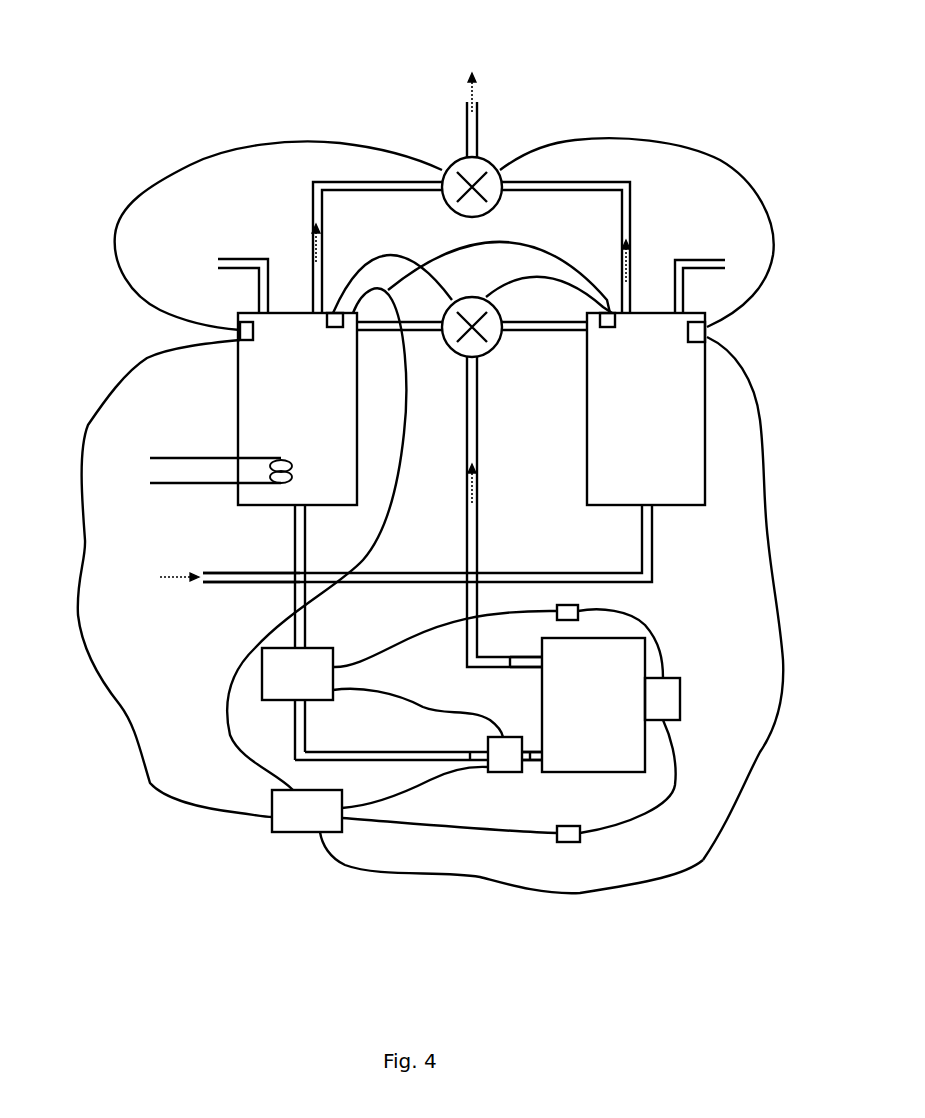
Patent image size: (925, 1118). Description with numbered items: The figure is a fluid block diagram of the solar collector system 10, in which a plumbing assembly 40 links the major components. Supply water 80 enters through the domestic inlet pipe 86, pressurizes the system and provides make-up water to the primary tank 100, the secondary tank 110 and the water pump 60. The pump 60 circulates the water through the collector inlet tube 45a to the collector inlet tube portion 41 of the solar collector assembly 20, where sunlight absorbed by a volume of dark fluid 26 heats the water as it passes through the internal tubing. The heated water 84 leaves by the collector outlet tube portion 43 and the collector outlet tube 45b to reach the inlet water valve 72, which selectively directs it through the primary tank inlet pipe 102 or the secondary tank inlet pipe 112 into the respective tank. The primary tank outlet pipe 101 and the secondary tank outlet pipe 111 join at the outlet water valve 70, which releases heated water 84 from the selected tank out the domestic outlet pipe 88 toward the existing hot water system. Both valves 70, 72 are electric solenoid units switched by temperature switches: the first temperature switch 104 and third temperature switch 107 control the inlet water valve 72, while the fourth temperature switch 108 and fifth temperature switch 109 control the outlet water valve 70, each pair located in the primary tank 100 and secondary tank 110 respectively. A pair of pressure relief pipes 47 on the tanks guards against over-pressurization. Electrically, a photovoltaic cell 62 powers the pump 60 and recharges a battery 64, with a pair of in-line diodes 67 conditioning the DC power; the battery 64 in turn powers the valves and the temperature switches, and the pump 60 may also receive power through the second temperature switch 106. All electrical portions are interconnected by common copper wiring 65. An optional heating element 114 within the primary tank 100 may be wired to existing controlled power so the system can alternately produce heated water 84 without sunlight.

The solar collector system 10 is at (140, 132).
The solar collector assembly 20 is at (668, 793).
The dark fluid 26 is at (647, 747).
The plumbing assembly 40 is at (590, 180).
The collector inlet tube portion 41 is at (533, 760).
The collector outlet tube portion 43 is at (527, 667).
The collector inlet tube 45a is at (420, 752).
The collector outlet tube 45b is at (470, 403).
The pressure relief pipes 47 is at (247, 260).
The water pump 60 is at (285, 685).
The photovoltaic cell 62 is at (670, 700).
The battery 64 is at (302, 815).
The copper wiring 65 is at (505, 283).
The in-line diodes 67 is at (578, 607).
The outlet water valve 70 is at (485, 157).
The inlet water valve 72 is at (493, 352).
The supply water 80 is at (163, 580).
The heated water 84 is at (474, 94).
The domestic inlet pipe 86 is at (262, 577).
The domestic outlet pipe 88 is at (467, 140).
The primary tank 100 is at (273, 498).
The primary tank outlet pipe 101 is at (342, 180).
The primary tank inlet pipe 102 is at (378, 327).
The first temperature switch 104 is at (337, 323).
The second temperature switch 106 is at (505, 745).
The third temperature switch 107 is at (608, 322).
The fourth temperature switch 108 is at (245, 332).
The fifth temperature switch 109 is at (697, 333).
The secondary tank 110 is at (693, 465).
The secondary tank outlet pipe 111 is at (628, 215).
The secondary tank inlet pipe 112 is at (550, 332).
The heating element 114 is at (290, 458).